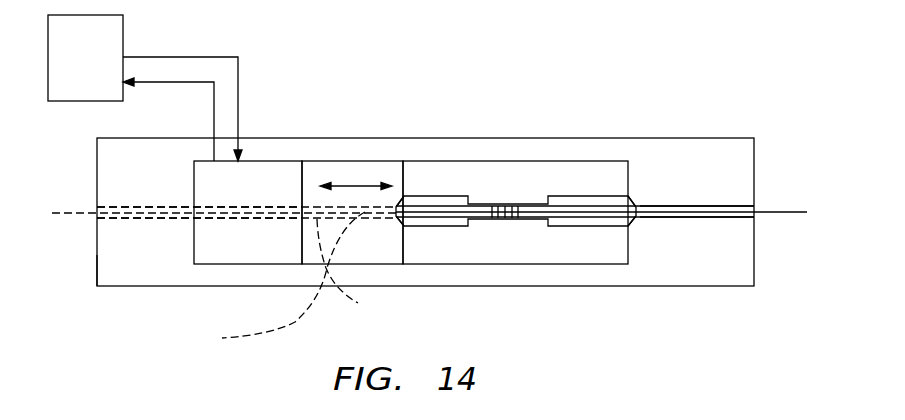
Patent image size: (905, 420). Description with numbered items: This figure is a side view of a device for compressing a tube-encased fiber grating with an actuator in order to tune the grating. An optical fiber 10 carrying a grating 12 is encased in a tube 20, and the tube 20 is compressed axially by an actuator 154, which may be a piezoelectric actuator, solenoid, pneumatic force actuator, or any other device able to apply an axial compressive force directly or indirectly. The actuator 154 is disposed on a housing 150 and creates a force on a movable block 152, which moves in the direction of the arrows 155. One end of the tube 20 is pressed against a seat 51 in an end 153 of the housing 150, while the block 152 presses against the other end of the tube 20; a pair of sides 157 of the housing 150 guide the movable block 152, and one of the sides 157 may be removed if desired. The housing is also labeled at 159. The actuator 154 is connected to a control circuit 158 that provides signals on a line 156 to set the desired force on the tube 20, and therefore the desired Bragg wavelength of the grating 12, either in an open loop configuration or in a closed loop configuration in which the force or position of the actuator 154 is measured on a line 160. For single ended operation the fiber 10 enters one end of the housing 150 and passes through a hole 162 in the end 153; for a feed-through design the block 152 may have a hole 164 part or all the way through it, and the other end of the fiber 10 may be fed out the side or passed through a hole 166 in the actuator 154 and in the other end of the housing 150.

The fiber 10 is at (70, 211).
The grating 12 is at (512, 205).
The tube 20 is at (451, 188).
The seat 51 is at (397, 228).
The housing 150 is at (542, 124).
The movable block 152 is at (316, 170).
The end 153 is at (752, 154).
The actuator 154 is at (238, 188).
The arrows 155 is at (363, 183).
The line 156 is at (240, 72).
The sides 157 is at (594, 138).
The control circuit 158 is at (120, 27).
The housing wall 159 is at (103, 268).
The line 160 is at (213, 106).
The hole 162 is at (665, 204).
The hole 164 is at (358, 273).
The hole 166 is at (117, 207).